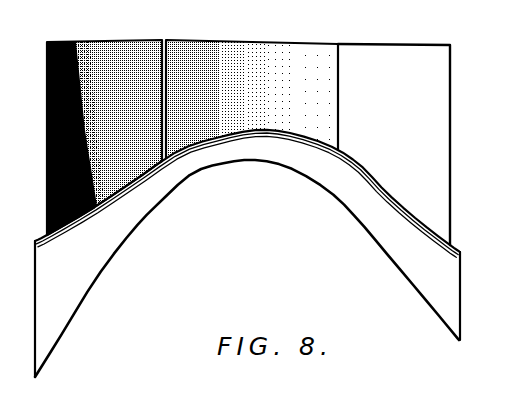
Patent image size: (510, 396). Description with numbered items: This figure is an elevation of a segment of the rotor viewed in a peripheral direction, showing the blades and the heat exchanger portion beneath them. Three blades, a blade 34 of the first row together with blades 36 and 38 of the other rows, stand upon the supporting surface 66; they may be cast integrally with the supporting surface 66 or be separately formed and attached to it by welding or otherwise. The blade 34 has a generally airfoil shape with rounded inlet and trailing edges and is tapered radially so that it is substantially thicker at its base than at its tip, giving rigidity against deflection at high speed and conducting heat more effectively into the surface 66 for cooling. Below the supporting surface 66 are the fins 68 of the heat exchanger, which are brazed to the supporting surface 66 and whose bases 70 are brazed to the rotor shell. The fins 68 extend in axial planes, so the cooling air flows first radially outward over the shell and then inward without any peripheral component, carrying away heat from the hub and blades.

The blade of the first row 34 is at (106, 109).
The blade 36 is at (260, 108).
The blade 38 is at (403, 109).
The supporting surface 66 is at (127, 183).
The fin 68 is at (95, 275).
The base of fin 70 is at (60, 337).